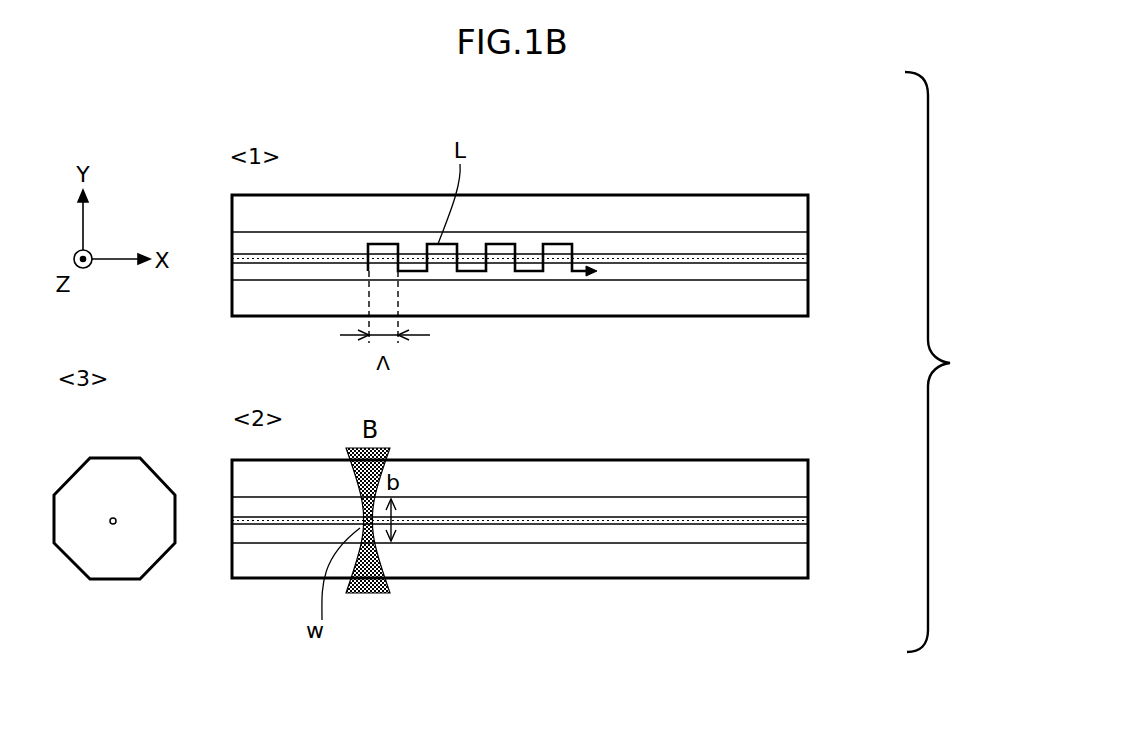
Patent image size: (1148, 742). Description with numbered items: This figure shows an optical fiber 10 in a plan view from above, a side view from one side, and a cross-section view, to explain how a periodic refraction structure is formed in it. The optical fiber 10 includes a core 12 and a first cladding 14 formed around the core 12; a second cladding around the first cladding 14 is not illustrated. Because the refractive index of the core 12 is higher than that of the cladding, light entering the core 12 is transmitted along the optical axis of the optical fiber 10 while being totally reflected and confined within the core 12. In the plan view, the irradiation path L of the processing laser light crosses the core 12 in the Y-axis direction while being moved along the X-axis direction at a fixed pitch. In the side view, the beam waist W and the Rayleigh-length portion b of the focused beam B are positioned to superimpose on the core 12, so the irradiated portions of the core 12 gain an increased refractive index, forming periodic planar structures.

The optical fiber 10 is at (654, 161).
The core 12 is at (800, 258).
The first cladding 14 is at (800, 242).